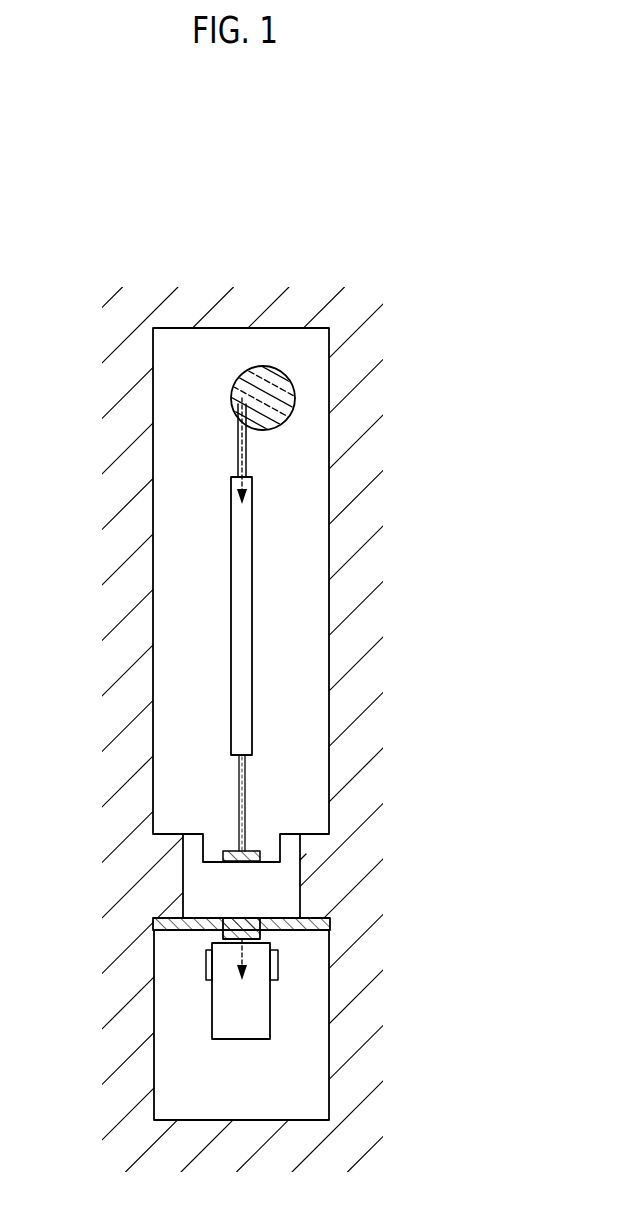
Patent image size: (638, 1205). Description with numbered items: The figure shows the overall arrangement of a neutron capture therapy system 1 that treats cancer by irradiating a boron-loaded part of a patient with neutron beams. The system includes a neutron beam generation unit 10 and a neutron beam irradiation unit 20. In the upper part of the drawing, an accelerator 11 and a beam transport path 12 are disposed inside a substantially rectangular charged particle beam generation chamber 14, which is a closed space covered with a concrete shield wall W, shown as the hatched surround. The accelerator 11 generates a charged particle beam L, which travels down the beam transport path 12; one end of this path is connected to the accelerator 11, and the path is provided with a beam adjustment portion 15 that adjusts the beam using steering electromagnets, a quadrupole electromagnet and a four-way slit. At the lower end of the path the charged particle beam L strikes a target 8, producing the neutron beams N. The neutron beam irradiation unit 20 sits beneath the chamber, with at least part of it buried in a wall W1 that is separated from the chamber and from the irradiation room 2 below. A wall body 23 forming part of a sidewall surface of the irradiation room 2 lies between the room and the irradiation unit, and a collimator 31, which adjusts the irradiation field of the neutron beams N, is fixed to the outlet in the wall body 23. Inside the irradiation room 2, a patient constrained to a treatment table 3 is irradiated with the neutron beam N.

The neutron capture therapy system 1 is at (412, 316).
The neutron beam generation unit 10 is at (299, 544).
The charged particle beam generation chamber 14 is at (171, 370).
The accelerator 11 is at (266, 370).
The charged particle beam L is at (248, 455).
The beam transport path 12 is at (254, 567).
The beam adjustment portion 15 is at (243, 624).
The target 8 is at (233, 851).
The neutron beam irradiation unit 20 is at (304, 895).
The irradiation room 2 is at (245, 998).
The wall body 23 is at (297, 930).
The collimator 31 is at (228, 917).
The treatment table 3 is at (212, 1022).
The neutron beam N is at (240, 957).
The concrete shield wall W is at (355, 597).
The wall W1 is at (305, 855).